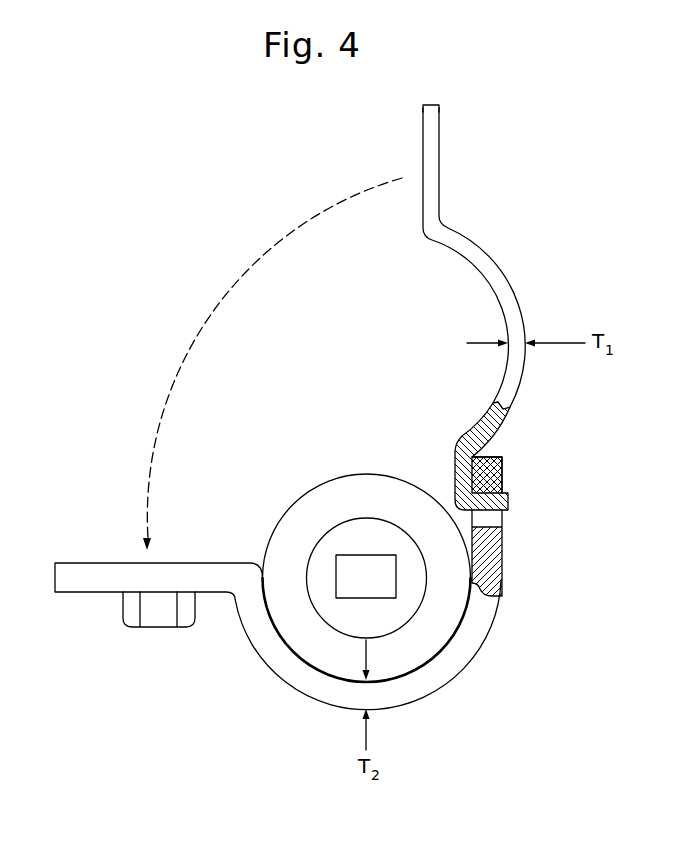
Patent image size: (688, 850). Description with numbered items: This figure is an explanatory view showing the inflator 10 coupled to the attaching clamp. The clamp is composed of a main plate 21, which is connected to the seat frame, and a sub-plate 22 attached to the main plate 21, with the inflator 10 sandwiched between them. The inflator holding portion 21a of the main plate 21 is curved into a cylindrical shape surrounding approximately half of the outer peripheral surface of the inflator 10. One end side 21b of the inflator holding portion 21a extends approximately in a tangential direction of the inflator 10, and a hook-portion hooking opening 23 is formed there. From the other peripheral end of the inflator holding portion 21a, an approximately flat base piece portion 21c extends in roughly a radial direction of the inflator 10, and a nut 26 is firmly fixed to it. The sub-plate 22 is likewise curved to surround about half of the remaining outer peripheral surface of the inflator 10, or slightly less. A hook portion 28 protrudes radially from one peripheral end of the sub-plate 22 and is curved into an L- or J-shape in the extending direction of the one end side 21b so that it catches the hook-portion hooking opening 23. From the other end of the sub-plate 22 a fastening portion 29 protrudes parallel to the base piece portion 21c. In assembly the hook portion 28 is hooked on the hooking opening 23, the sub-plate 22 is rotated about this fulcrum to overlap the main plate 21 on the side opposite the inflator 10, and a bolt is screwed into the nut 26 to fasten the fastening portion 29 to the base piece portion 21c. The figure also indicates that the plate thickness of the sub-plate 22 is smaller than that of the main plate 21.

The inflator 10 is at (450, 617).
The main plate 21 is at (353, 599).
The inflator holding portion 21a is at (415, 690).
The one end side 21b is at (492, 457).
The base piece portion 21c is at (82, 563).
The sub-plate 22 is at (501, 231).
The hook-portion hooking opening 23 is at (498, 517).
The nut 26 is at (123, 614).
The hook portion 28 is at (508, 500).
The fastening portion 29 is at (440, 123).